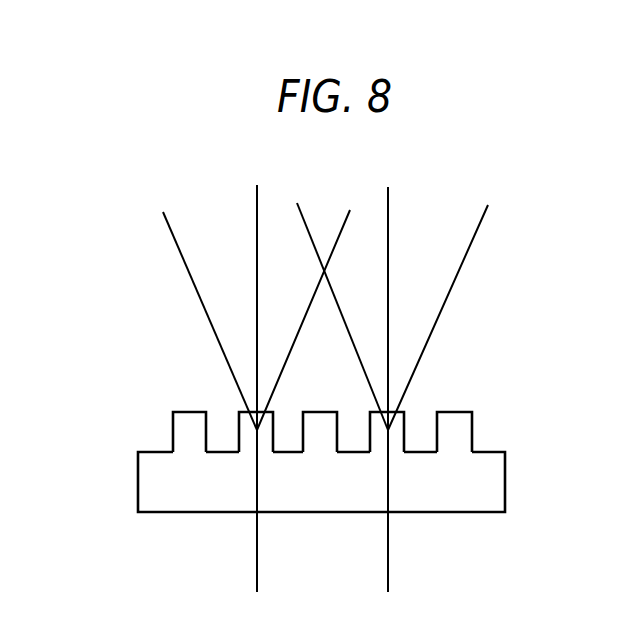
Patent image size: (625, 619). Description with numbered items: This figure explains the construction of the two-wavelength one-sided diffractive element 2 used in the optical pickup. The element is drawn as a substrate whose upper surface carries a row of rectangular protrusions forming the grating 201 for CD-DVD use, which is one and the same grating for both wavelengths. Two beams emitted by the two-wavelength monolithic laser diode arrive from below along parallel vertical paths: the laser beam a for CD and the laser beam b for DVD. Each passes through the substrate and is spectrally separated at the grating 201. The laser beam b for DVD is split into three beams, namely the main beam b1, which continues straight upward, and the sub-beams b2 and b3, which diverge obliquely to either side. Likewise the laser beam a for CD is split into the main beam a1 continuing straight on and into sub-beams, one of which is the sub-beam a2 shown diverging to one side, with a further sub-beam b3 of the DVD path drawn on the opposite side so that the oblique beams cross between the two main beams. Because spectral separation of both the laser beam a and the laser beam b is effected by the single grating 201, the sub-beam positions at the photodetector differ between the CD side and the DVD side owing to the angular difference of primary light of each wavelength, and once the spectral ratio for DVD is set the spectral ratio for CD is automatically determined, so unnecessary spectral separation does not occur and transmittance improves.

The two-wavelength one-sided diffractive element 2 is at (506, 468).
The grating for CD-DVD use 201 is at (473, 418).
The main beam b1 is at (257, 204).
The sub-beam b2 is at (180, 257).
The sub-beam b3 is at (350, 216).
The main beam a1 is at (390, 202).
The sub-beam a2 is at (330, 285).
The laser beam for CD a is at (390, 541).
The laser beam for DVD b is at (258, 541).